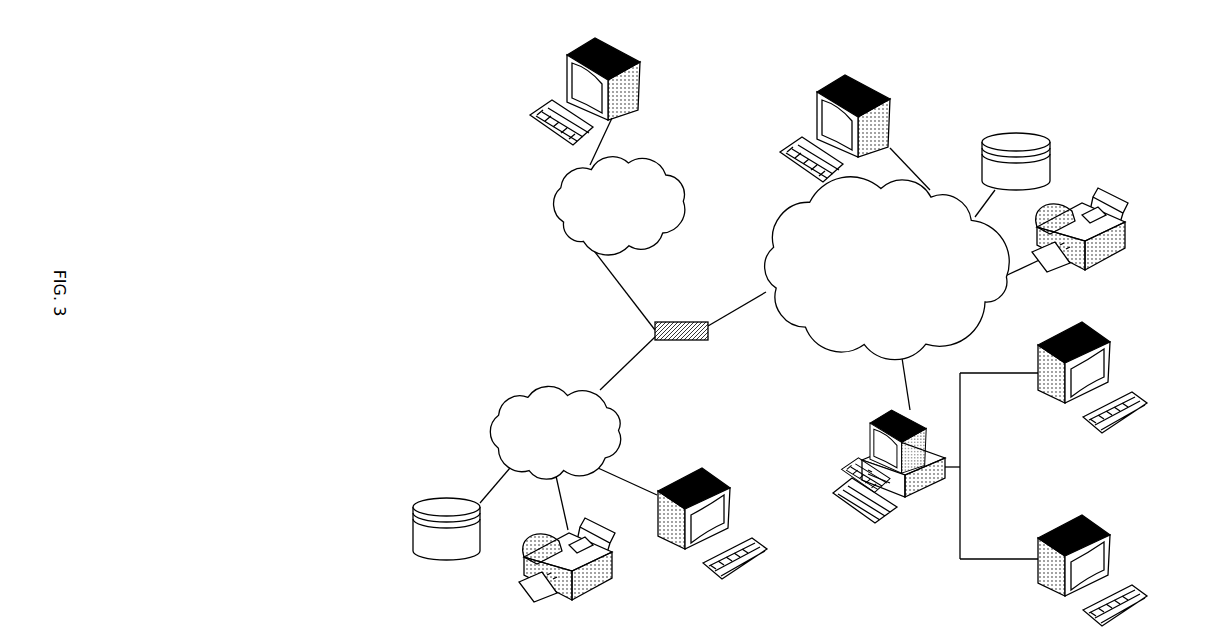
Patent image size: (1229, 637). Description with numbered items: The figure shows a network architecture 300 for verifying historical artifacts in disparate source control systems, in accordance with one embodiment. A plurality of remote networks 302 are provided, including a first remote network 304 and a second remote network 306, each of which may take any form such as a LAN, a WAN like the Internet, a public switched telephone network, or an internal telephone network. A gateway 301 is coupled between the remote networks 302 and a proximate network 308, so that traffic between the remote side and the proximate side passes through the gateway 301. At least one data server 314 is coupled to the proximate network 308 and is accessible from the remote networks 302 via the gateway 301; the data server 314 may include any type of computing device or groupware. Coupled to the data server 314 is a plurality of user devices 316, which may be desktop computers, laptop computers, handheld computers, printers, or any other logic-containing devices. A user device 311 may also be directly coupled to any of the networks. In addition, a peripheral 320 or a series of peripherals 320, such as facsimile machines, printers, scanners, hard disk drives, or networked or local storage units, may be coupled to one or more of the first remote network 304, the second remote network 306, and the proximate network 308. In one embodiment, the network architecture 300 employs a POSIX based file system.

The network architecture 300 is at (1145, 68).
The gateway 301 is at (683, 322).
The remote networks 302 is at (541, 267).
The first remote network 304 is at (493, 413).
The second remote network 306 is at (685, 210).
The proximate network 308 is at (978, 318).
The user device 311 is at (893, 128).
The data server 314 is at (869, 435).
The user devices 316 is at (643, 82).
The peripheral 320 is at (1012, 133).